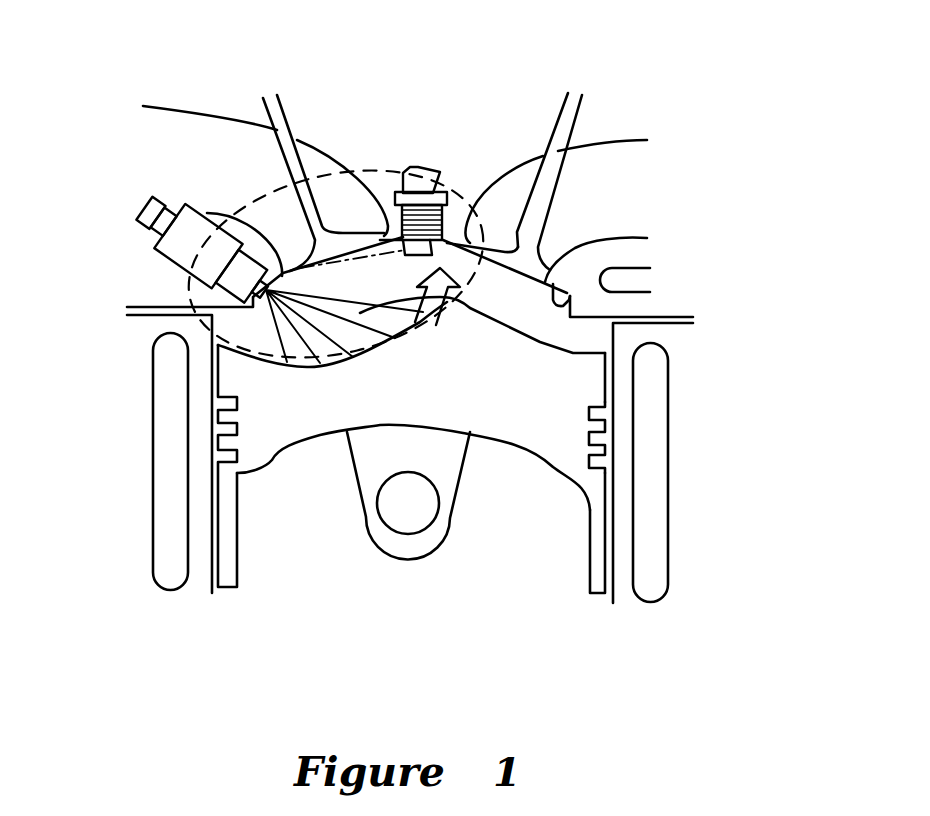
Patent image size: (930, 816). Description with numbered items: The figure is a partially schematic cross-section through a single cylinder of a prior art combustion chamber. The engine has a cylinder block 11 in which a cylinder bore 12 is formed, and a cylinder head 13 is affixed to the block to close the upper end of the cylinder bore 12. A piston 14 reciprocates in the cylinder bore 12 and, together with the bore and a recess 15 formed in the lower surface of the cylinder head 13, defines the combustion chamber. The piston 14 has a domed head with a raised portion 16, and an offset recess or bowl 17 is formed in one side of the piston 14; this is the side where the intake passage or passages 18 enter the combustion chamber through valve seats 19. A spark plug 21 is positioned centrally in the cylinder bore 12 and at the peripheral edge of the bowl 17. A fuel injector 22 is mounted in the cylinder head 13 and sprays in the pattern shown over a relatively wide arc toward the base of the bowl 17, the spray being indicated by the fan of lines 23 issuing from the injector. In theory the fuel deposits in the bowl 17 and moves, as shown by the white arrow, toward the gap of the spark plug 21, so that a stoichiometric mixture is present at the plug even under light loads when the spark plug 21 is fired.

The cylinder block 11 is at (683, 458).
The cylinder bore 12 is at (633, 553).
The cylinder head 13 is at (690, 293).
The piston 14 is at (590, 383).
The recess 15 is at (570, 297).
The raised portion 16 is at (503, 322).
The bowl 17 is at (385, 347).
The intake passage 18 is at (177, 133).
The valve seat 19 is at (387, 231).
The spark plug 21 is at (413, 193).
The fuel injector 22 is at (193, 250).
The fuel spray 23 is at (373, 343).